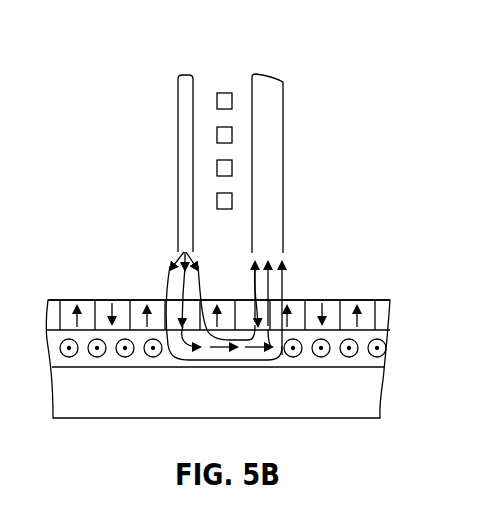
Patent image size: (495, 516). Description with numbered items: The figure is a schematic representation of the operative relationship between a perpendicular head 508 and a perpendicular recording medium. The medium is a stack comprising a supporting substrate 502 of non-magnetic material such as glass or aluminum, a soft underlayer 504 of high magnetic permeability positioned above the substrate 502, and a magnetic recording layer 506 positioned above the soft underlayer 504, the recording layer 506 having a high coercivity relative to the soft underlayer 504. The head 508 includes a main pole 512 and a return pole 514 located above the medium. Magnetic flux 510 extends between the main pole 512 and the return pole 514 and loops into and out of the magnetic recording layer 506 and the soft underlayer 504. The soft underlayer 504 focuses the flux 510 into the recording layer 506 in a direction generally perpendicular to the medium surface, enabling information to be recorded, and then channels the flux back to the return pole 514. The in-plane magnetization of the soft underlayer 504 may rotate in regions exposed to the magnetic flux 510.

The supporting substrate 502 is at (135, 393).
The soft underlayer 504 is at (388, 342).
The magnetic recording layer 506 is at (386, 303).
The perpendicular head 508 is at (190, 58).
The magnetic flux 510 is at (283, 284).
The main pole 512 is at (185, 150).
The return pole 514 is at (278, 158).